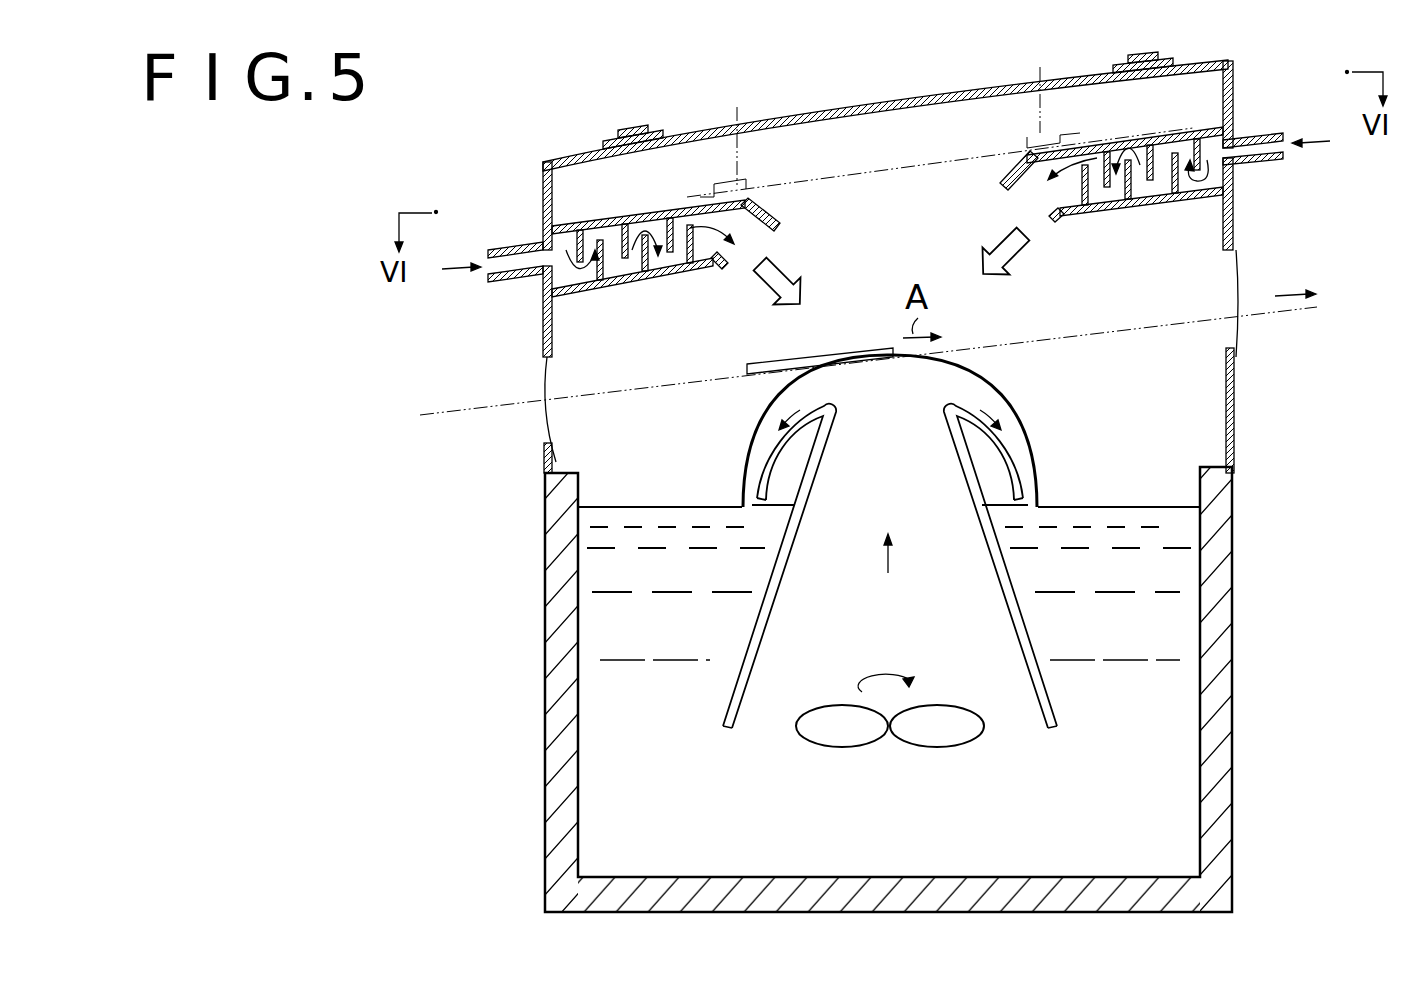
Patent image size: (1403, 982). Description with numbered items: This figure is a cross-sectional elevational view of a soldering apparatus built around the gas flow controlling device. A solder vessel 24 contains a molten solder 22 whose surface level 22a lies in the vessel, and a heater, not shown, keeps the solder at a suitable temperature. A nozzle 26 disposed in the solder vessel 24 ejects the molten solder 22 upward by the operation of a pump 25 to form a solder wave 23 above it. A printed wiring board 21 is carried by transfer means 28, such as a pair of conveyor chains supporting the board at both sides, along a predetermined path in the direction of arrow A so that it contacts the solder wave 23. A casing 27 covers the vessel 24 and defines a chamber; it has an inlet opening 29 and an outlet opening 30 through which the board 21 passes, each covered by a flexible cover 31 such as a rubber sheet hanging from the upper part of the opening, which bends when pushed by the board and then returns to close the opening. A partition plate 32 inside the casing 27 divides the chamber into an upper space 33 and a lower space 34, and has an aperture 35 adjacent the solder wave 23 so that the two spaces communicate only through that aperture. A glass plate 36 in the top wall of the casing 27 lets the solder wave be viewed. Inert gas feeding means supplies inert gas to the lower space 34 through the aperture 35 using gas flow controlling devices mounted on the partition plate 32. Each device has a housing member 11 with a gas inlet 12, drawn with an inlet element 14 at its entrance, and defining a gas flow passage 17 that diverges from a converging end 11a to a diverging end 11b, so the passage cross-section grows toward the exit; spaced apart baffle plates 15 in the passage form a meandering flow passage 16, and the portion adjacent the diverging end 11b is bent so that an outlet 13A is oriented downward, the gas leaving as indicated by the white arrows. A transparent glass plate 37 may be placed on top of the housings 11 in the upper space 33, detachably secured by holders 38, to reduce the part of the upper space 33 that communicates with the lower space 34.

The housing member 11 is at (633, 212).
The converging end 11a is at (540, 282).
The diverging end 11b is at (728, 270).
The gas inlet 12 is at (547, 255).
The outlet 13A is at (747, 237).
The gas inlet pipe 14 is at (508, 243).
The baffle plates 15 is at (579, 245).
The meandering flow passage 16 is at (657, 227).
The gas flow passage 17 is at (750, 232).
The printed wiring board 21 is at (850, 347).
The molten solder 22 is at (1172, 630).
The surface level 22a is at (1113, 507).
The solder wave 23 is at (950, 390).
The solder vessel 24 is at (1227, 745).
The pump 25 is at (945, 732).
The nozzle 26 is at (830, 443).
The casing 27 is at (1235, 74).
The transfer means 28 is at (1273, 307).
The inlet opening 29 is at (550, 383).
The outlet opening 30 is at (1227, 263).
The flexible cover 31 is at (543, 423).
The partition plate 32 is at (677, 280).
The upper space 33 is at (967, 127).
The lower space 34 is at (1123, 300).
The aperture 35 is at (870, 225).
The glass plate 36 is at (694, 132).
The glass plate 37 is at (907, 158).
The holders 38 is at (883, 107).